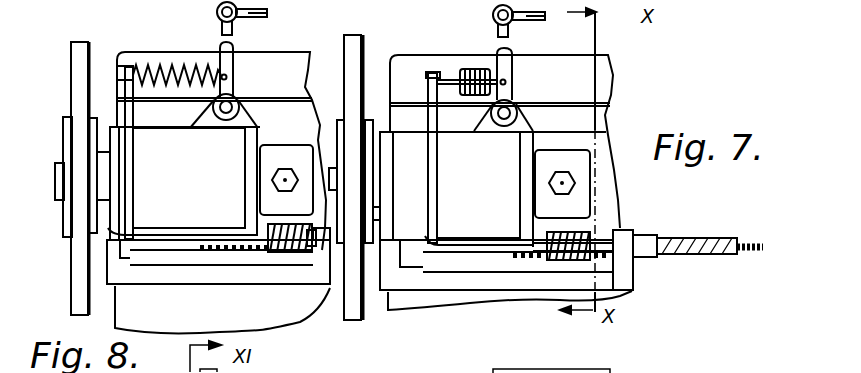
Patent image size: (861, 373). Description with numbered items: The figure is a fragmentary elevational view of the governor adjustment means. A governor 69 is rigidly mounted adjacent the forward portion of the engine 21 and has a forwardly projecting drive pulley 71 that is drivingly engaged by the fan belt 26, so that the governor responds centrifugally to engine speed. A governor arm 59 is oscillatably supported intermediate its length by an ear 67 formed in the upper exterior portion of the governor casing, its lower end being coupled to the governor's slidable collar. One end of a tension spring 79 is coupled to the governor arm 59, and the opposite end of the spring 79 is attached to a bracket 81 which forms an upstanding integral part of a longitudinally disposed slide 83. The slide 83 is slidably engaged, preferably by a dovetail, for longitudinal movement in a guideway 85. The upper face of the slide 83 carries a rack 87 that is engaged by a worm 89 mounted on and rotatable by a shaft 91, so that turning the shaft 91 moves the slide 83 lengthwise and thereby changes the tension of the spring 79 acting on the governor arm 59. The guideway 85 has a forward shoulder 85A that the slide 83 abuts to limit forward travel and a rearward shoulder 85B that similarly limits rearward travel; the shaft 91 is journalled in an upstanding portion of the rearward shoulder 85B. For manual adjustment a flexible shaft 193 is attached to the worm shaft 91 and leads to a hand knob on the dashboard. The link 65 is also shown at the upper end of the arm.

In FIG. 8, the engine 21 is at (135, 52).
In FIG. 7, the engine 21 is at (417, 62).
In FIG. 8, the fan belt 26 is at (80, 76).
In FIG. 7, the fan belt 26 is at (352, 322).
In FIG. 8, the governor arm 59 is at (228, 66).
In FIG. 7, the governor arm 59 is at (512, 68).
In FIG. 8, the link 65 is at (252, 18).
In FIG. 7, the link 65 is at (521, 26).
In FIG. 8, the ear 67 is at (209, 112).
In FIG. 7, the ear 67 is at (489, 116).
In FIG. 8, the governor 69 is at (212, 180).
In FIG. 7, the governor 69 is at (502, 187).
In FIG. 8, the drive pulley 71 is at (68, 131).
In FIG. 7, the drive pulley 71 is at (373, 222).
In FIG. 8, the tension spring 79 is at (174, 64).
In FIG. 7, the tension spring 79 is at (477, 69).
In FIG. 8, the bracket 81 is at (131, 146).
In FIG. 7, the bracket 81 is at (433, 156).
In FIG. 8, the slide 83 is at (216, 258).
In FIG. 7, the slide 83 is at (482, 264).
In FIG. 8, the guideway 85 is at (320, 265).
In FIG. 7, the guideway 85 is at (415, 268).
In FIG. 8, the forward shoulder 85A is at (122, 262).
In FIG. 7, the forward shoulder 85A is at (388, 258).
In FIG. 7, the rearward shoulder 85B is at (633, 270).
In FIG. 8, the rack 87 is at (245, 266).
In FIG. 7, the rack 87 is at (548, 263).
In FIG. 8, the worm 89 is at (290, 254).
In FIG. 7, the worm 89 is at (592, 232).
In FIG. 7, the shaft 91 is at (602, 237).
In FIG. 7, the flexible shaft 193 is at (712, 237).